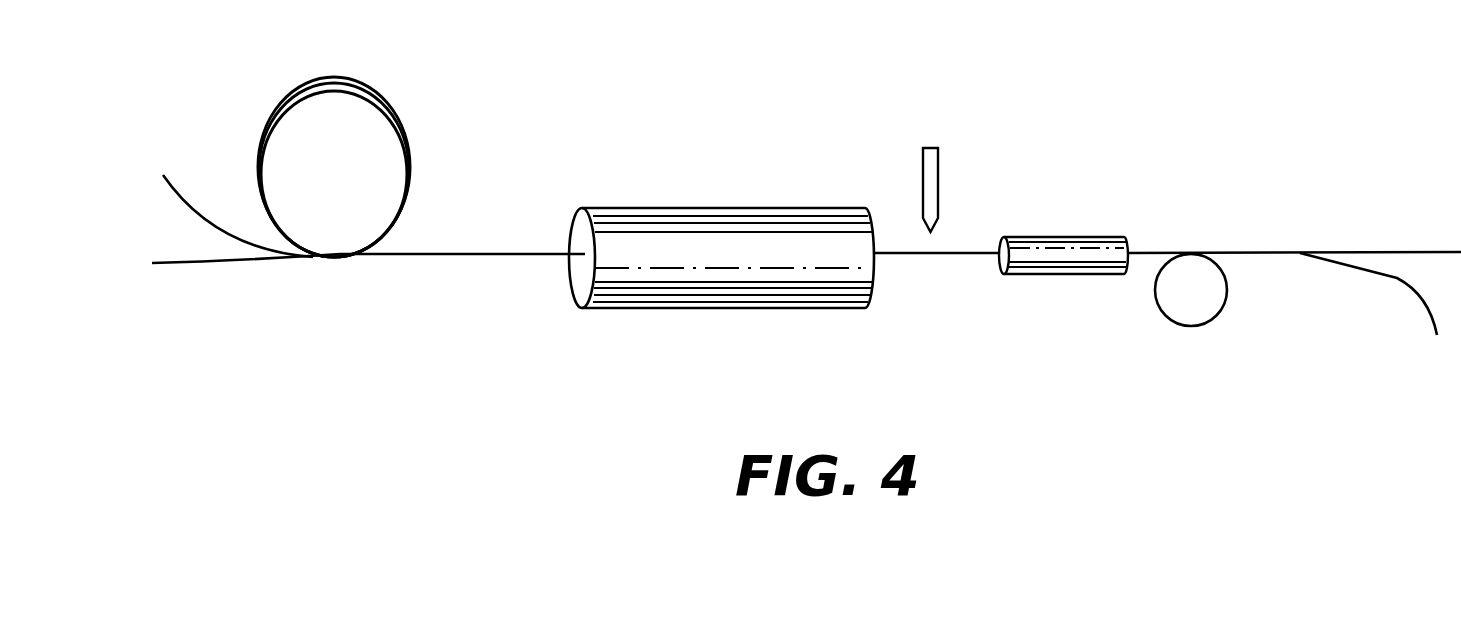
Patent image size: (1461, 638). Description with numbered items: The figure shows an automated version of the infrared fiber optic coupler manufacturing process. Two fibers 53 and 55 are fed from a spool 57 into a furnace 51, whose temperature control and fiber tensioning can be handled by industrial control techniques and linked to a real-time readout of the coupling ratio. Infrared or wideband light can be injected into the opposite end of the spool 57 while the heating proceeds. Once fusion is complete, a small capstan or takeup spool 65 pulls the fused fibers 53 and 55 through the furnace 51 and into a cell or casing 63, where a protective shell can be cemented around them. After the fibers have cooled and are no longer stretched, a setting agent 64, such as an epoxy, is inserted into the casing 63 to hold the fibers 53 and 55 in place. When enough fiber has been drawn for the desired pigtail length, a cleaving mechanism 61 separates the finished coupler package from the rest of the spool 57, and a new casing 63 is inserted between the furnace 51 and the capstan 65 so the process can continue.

The furnace 51 is at (755, 208).
The fiber 53 is at (220, 267).
The fiber 55 is at (190, 213).
The spool 57 is at (413, 92).
The cleaving mechanism 61 is at (940, 188).
The casing 63 is at (1034, 287).
The setting agent 64 is at (996, 262).
The capstan 65 is at (1226, 295).